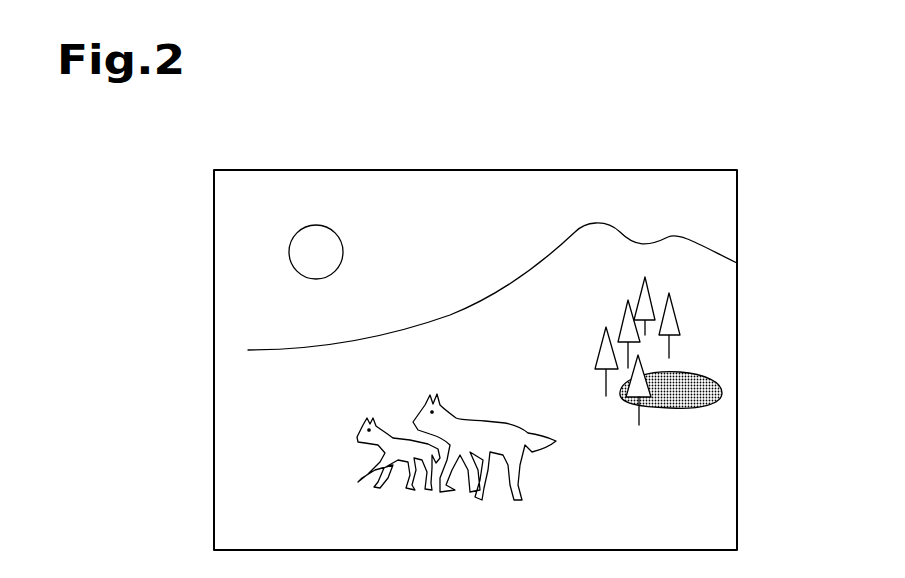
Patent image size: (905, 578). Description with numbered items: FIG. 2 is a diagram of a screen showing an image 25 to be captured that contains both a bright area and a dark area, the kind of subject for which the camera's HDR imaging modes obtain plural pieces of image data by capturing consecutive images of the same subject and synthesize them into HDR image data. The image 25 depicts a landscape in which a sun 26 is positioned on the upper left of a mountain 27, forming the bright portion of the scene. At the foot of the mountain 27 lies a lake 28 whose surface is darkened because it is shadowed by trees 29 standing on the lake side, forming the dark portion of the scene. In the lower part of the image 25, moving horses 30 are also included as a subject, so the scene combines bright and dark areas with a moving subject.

The image 25 is at (551, 160).
The sun 26 is at (306, 239).
The mountain 27 is at (549, 268).
The lake 28 is at (714, 381).
The trees 29 is at (674, 316).
The moving horses 30 is at (495, 400).